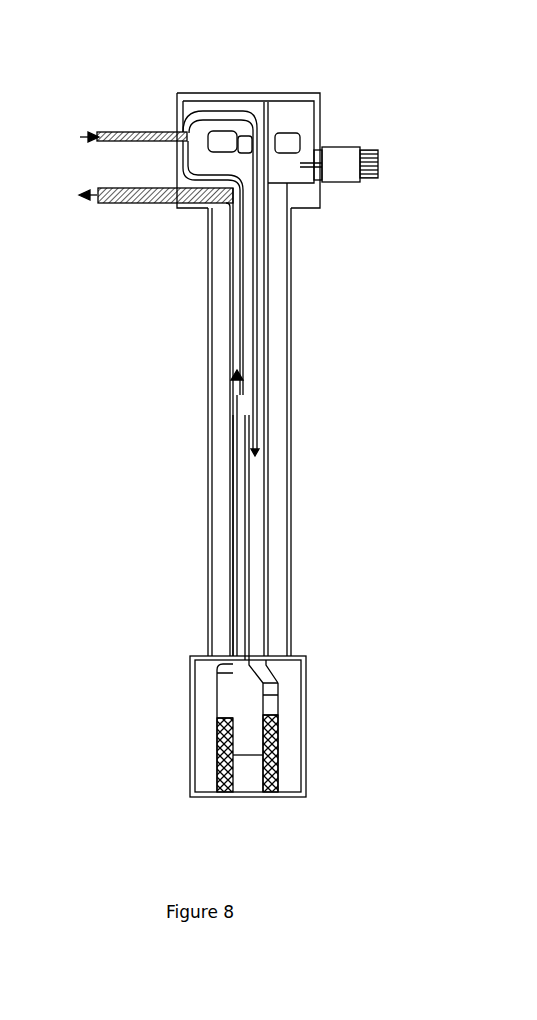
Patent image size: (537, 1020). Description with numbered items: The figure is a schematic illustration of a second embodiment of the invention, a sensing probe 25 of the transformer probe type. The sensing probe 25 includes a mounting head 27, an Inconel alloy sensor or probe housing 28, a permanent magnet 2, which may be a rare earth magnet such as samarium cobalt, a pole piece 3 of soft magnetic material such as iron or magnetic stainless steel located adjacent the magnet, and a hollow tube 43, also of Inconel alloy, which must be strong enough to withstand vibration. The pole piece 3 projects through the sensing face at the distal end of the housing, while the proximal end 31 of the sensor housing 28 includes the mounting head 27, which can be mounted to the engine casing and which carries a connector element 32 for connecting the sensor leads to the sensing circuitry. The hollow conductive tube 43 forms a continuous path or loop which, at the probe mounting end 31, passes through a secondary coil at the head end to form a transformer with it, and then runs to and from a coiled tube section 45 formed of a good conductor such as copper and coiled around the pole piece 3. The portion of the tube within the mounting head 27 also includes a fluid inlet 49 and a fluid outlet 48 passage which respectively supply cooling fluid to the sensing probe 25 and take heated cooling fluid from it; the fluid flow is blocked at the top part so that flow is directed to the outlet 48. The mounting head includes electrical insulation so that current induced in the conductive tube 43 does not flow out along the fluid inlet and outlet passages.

The permanent magnet 2 is at (248, 730).
The pole piece 3 is at (247, 782).
The sensing probe 25 is at (339, 452).
The mounting head 27 is at (322, 102).
The sensor housing 28 is at (289, 318).
The proximal end 31 is at (395, 204).
The connector element 32 is at (347, 149).
The hollow tube 43 is at (260, 252).
The coiled tube section 45 is at (273, 742).
The fluid outlet 48 is at (137, 205).
The fluid inlet 49 is at (243, 141).